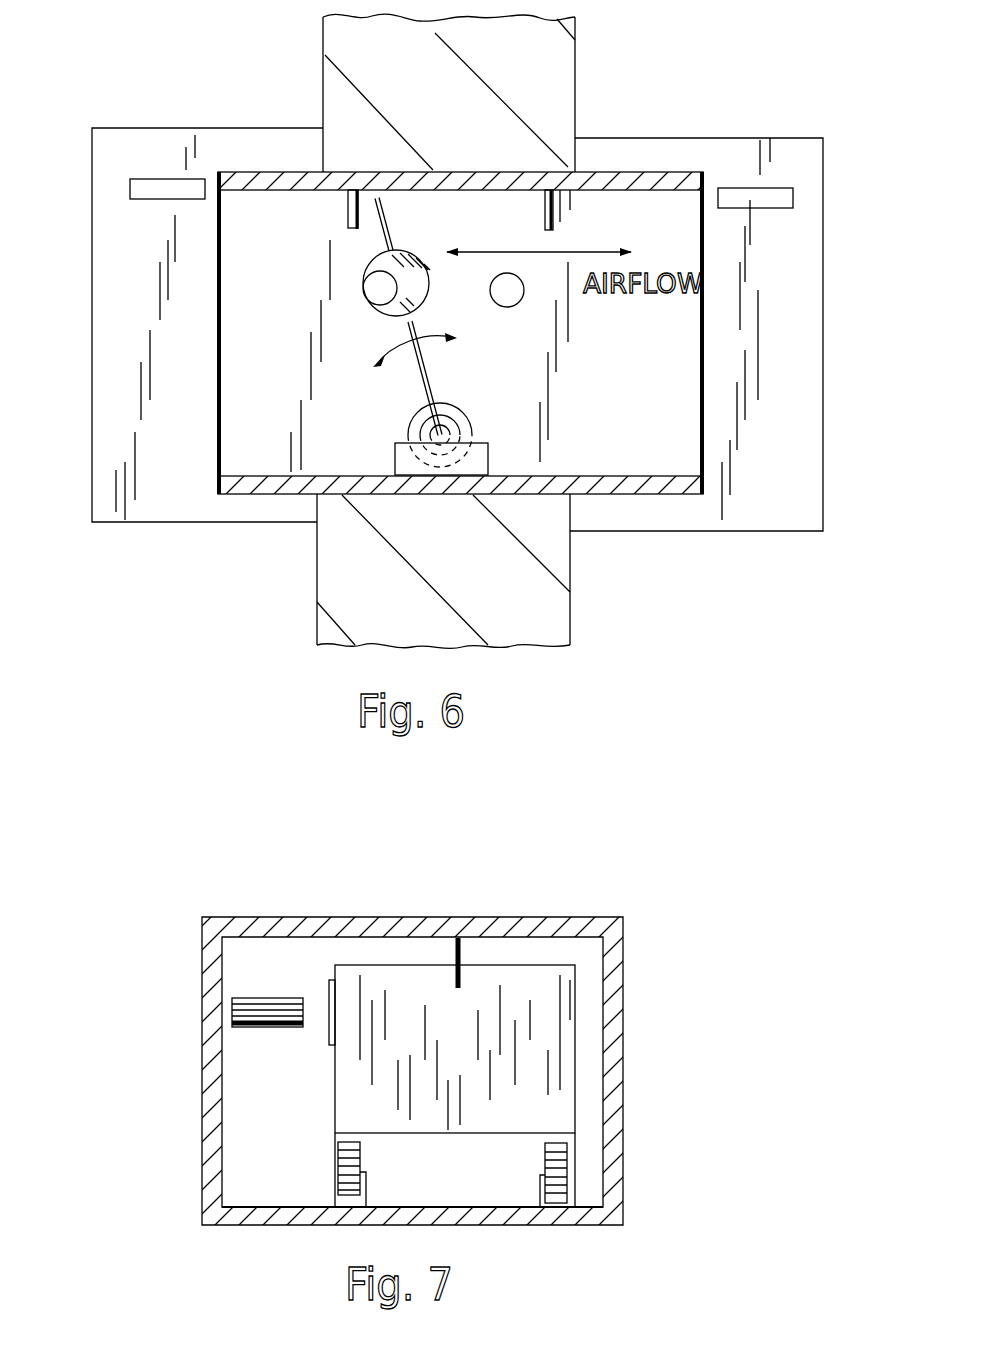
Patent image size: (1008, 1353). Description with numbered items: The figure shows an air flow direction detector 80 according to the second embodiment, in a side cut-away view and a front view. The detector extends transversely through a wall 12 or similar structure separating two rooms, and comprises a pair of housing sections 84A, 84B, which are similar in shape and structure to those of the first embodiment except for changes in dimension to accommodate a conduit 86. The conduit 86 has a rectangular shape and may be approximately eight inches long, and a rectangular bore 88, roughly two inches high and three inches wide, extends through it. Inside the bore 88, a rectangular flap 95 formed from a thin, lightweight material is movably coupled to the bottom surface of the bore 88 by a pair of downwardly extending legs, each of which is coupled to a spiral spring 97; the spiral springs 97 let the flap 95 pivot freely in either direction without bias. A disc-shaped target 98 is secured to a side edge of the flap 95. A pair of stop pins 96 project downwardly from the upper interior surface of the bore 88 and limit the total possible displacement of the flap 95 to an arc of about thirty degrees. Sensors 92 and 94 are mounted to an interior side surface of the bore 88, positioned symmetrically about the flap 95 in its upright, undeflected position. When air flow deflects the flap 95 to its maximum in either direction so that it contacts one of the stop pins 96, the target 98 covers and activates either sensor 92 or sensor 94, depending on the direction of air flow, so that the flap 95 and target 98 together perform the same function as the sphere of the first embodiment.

In FIG. 6, the wall 12 is at (572, 615).
In FIG. 6, the air flow direction detector 80 is at (463, 313).
In FIG. 6, the housing section 84A is at (825, 456).
In FIG. 6, the housing section 84B is at (90, 488).
In FIG. 6, the conduit 86 is at (588, 168).
In FIG. 7, the conduit 86 is at (623, 1016).
In FIG. 6, the rectangular bore 88 is at (328, 476).
In FIG. 7, the rectangular bore 88 is at (222, 1194).
In FIG. 6, the sensor 92 is at (370, 297).
In FIG. 7, the sensor 92 is at (245, 1028).
In FIG. 6, the sensor 94 is at (524, 298).
In FIG. 6, the rectangular flap 95 is at (393, 247).
In FIG. 7, the rectangular flap 95 is at (335, 1090).
In FIG. 6, the stop pins 96 is at (348, 236).
In FIG. 7, the stop pins 96 is at (462, 950).
In FIG. 6, the spiral spring 97 is at (462, 418).
In FIG. 7, the spiral spring 97 is at (362, 1158).
In FIG. 6, the disc-shaped target 98 is at (432, 301).
In FIG. 7, the disc-shaped target 98 is at (330, 1045).